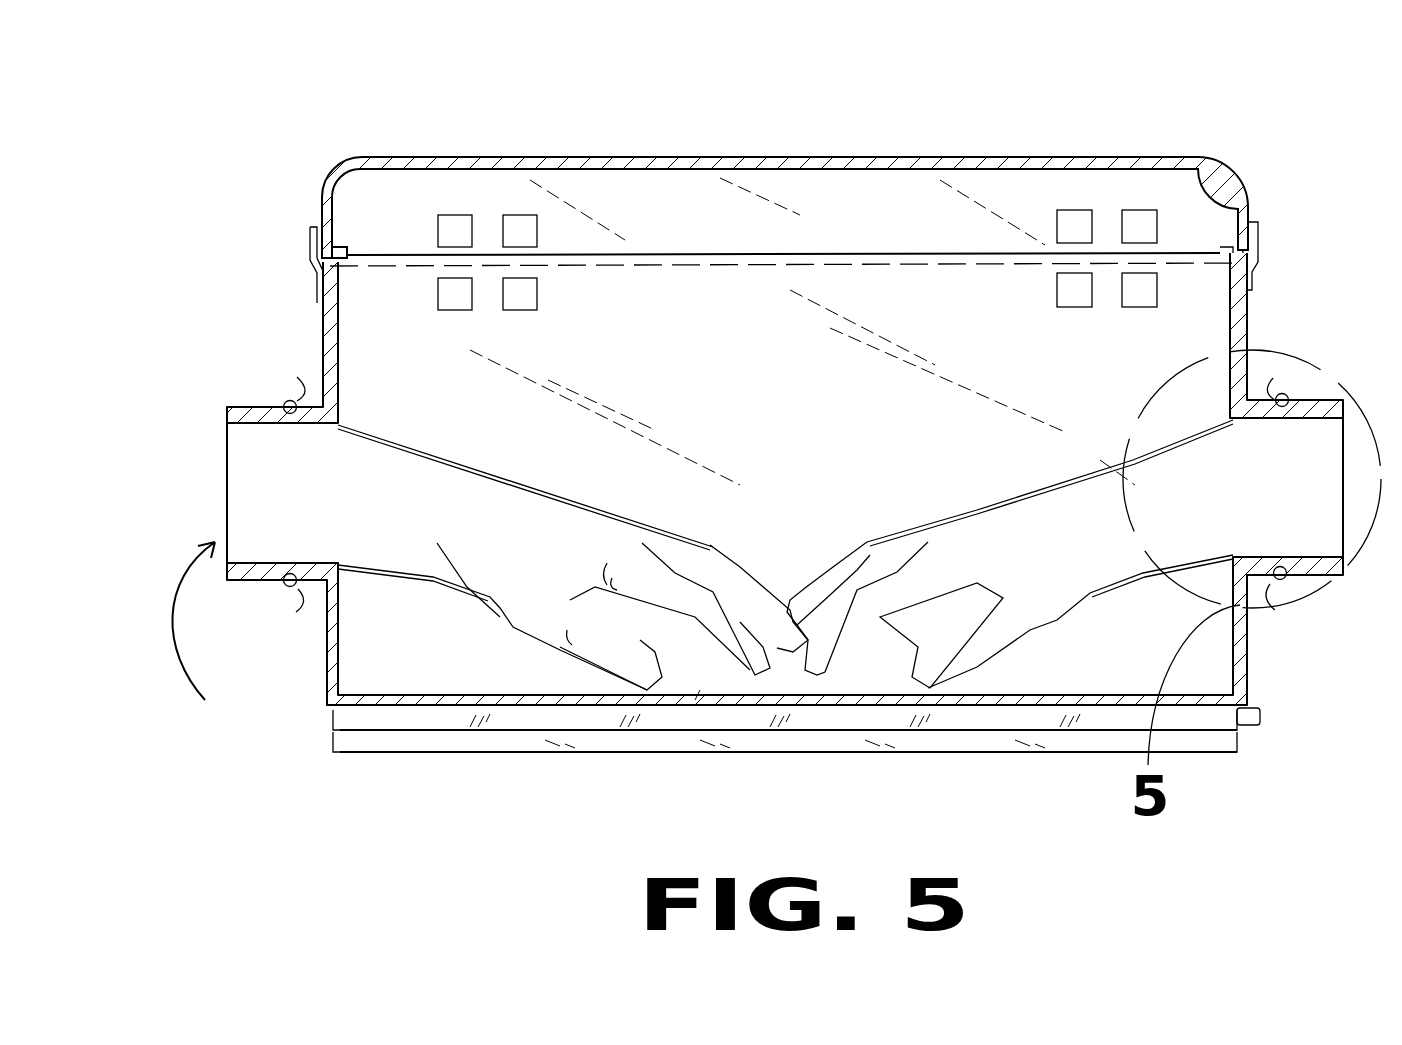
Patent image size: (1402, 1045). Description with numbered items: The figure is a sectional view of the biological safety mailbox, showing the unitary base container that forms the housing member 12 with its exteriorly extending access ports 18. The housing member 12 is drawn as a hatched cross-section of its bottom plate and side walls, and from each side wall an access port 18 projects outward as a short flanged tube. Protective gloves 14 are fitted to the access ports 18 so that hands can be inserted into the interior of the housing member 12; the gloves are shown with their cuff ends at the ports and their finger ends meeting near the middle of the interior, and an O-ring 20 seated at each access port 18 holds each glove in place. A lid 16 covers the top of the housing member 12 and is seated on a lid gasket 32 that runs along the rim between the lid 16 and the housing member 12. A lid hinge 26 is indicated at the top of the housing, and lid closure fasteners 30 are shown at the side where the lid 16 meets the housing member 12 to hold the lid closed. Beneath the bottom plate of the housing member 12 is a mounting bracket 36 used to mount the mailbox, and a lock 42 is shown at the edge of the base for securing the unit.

The housing member 12 is at (847, 678).
The protective gloves 14 is at (820, 657).
The lid 16 is at (820, 157).
The access port 18 is at (1283, 490).
The O-ring 20 is at (285, 400).
The lid hinge 26 is at (488, 233).
The lid closure fasteners 30 is at (316, 258).
The lid gasket 32 is at (973, 255).
The mounting bracket 36 is at (687, 733).
The lock 42 is at (1250, 728).